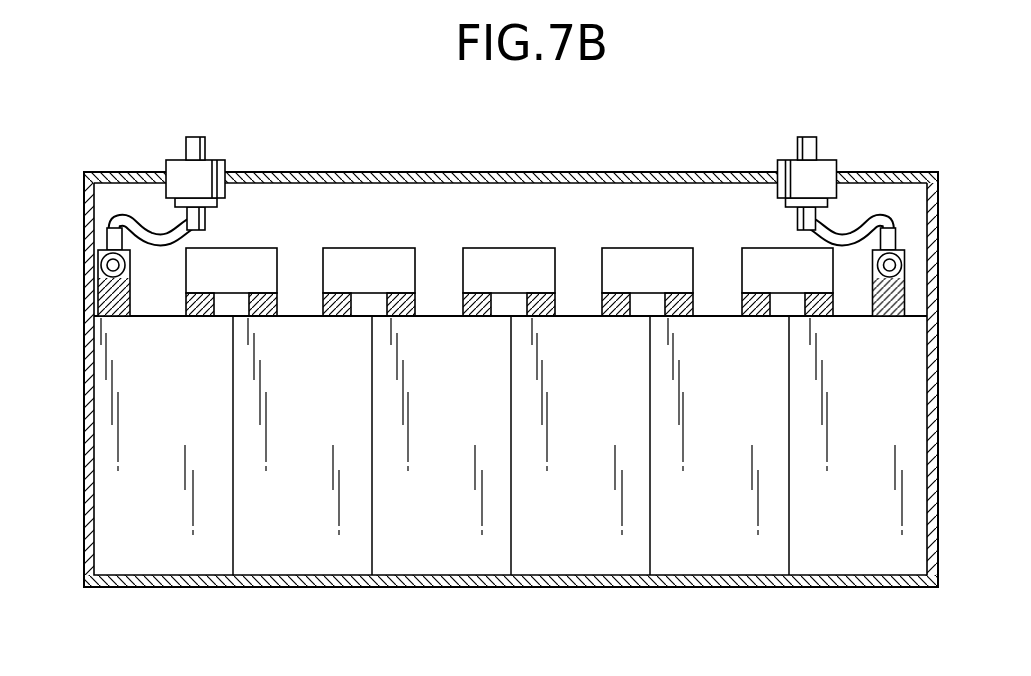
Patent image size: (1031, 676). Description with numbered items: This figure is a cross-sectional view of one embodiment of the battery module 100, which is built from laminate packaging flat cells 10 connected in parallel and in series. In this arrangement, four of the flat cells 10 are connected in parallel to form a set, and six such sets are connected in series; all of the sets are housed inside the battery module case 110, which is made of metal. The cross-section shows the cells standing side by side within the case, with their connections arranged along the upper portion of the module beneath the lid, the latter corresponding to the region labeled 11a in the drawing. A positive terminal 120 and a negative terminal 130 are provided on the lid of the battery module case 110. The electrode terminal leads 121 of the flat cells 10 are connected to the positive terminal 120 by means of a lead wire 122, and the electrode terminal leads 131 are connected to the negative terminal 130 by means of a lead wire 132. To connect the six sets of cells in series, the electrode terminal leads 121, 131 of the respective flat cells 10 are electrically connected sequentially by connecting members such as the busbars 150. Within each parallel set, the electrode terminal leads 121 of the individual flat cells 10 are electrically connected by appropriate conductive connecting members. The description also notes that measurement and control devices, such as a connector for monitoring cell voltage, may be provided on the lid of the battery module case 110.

The battery module 100 is at (141, 149).
The battery module case 110 is at (84, 462).
The cover of case 11a is at (647, 172).
The flat cell 10 is at (443, 565).
The busbar 150 is at (510, 262).
The positive terminal 120 is at (195, 137).
The lead wire 122 is at (123, 212).
The electrode terminal lead 121 is at (96, 283).
The negative terminal 130 is at (808, 137).
The lead wire 132 is at (887, 216).
The electrode terminal lead 131 is at (905, 276).